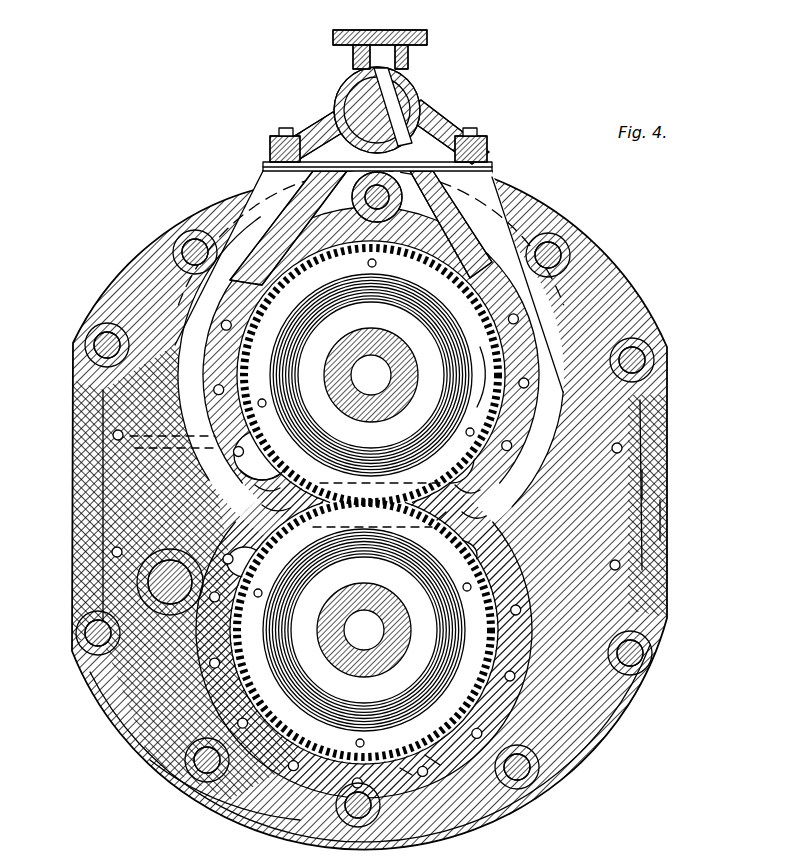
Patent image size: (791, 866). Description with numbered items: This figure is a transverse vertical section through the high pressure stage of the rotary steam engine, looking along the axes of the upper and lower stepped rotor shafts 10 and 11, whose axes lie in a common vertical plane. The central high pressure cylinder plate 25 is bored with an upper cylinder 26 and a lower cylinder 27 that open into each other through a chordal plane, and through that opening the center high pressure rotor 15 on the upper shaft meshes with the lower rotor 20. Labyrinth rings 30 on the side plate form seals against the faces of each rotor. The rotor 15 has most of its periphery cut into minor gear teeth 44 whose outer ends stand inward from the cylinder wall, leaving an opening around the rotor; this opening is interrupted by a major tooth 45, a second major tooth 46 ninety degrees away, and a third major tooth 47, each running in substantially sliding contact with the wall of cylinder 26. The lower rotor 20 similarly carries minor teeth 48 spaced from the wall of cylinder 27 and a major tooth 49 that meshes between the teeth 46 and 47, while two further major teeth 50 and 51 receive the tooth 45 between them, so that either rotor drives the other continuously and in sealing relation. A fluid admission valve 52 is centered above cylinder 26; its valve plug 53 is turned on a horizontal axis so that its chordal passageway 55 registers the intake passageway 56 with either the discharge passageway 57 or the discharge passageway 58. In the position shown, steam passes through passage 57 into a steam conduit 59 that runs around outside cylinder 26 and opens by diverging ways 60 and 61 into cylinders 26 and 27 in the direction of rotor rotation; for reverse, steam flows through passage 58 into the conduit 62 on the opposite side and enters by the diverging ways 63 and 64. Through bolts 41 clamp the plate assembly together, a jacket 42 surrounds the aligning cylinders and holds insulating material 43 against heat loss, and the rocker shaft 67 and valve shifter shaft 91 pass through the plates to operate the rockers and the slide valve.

The upper stepped rotor shaft 10 is at (366, 352).
The lower stepped rotor shaft 11 is at (362, 603).
The center high pressure rotor 15 is at (334, 240).
The lower high pressure rotor 20 is at (303, 725).
The central high pressure cylinder plate 25 is at (612, 418).
The upper cylinder bore 26 is at (427, 237).
The lower cylinder bore 27 is at (432, 760).
The labyrinth rings 30 is at (318, 327).
The through bolts 41 is at (640, 359).
The jacket 42 is at (660, 476).
The insulating material 43 is at (662, 522).
The gear teeth 44 is at (483, 355).
The major tooth 45 is at (470, 466).
The second major tooth 46 is at (277, 462).
The third major tooth 47 is at (253, 425).
The teeth 48 is at (407, 772).
The major tooth 49 is at (240, 552).
The major tooth 50 is at (441, 524).
The major tooth 51 is at (472, 658).
The fluid admission valve 52 is at (415, 86).
The valve plug 53 is at (418, 101).
The chordal passageway 55 is at (402, 118).
The intake passageway 56 is at (392, 50).
The discharge passageway 57 is at (430, 146).
The discharge passageway 58 is at (333, 140).
The steam conduit 59 is at (510, 220).
The diverging way 60 is at (472, 487).
The diverging way 61 is at (478, 513).
The reverse steam conduit 62 is at (258, 213).
The diverging way 63 is at (267, 489).
The diverging way 64 is at (267, 510).
The rocker shaft 67 is at (150, 578).
The valve shifter shaft 91 is at (625, 585).